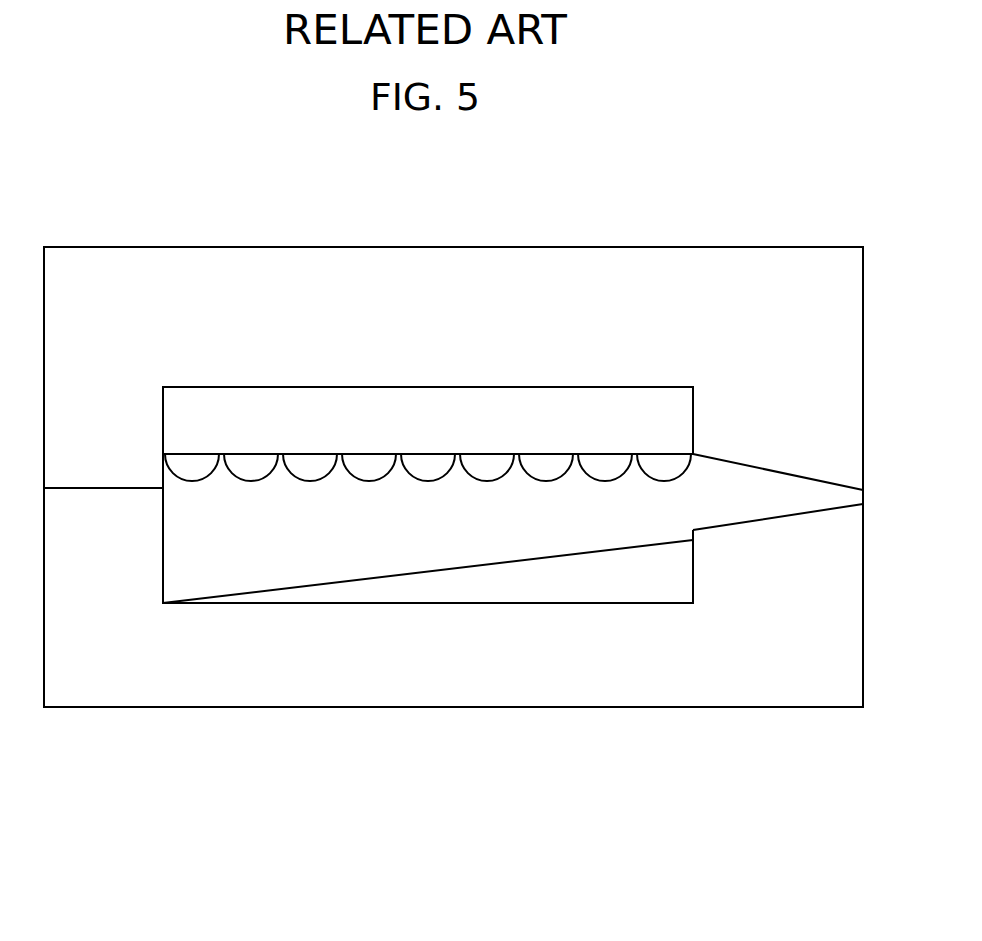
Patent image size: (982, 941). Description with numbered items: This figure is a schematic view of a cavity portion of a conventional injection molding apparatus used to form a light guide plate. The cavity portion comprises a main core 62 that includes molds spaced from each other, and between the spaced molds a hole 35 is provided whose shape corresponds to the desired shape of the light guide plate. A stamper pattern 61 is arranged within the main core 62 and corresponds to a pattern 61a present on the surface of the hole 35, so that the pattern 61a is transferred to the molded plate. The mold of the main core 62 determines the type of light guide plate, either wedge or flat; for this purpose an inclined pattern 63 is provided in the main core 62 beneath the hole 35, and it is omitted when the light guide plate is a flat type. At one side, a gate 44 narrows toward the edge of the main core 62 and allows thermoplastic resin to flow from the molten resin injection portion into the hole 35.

The stamper pattern 61 is at (428, 388).
The pattern 61a is at (493, 462).
The hole 35 is at (398, 543).
The inclined pattern 63 is at (625, 583).
The main core 62 is at (787, 673).
The gate 44 is at (800, 492).